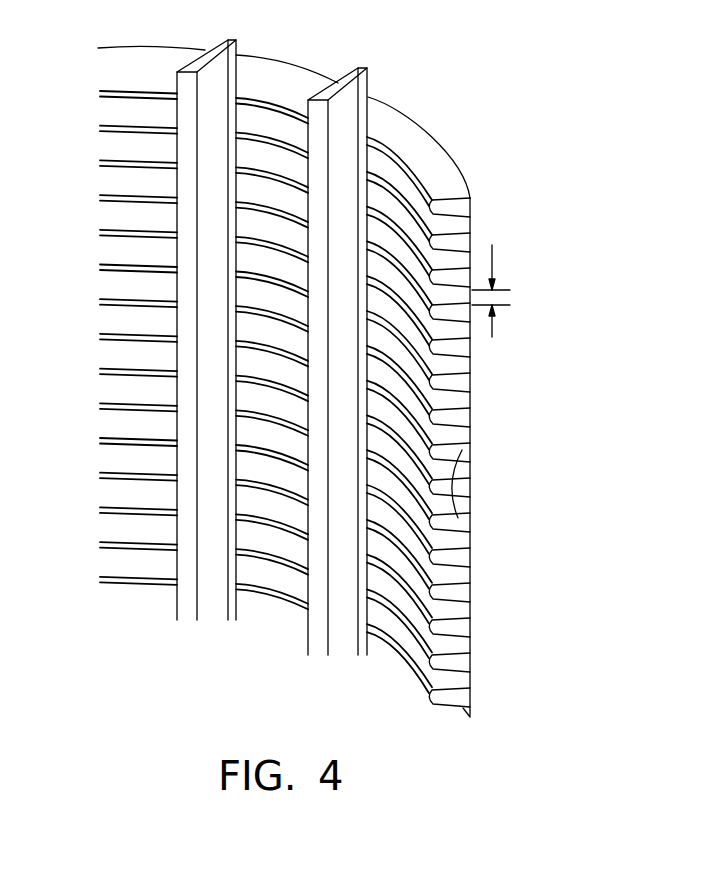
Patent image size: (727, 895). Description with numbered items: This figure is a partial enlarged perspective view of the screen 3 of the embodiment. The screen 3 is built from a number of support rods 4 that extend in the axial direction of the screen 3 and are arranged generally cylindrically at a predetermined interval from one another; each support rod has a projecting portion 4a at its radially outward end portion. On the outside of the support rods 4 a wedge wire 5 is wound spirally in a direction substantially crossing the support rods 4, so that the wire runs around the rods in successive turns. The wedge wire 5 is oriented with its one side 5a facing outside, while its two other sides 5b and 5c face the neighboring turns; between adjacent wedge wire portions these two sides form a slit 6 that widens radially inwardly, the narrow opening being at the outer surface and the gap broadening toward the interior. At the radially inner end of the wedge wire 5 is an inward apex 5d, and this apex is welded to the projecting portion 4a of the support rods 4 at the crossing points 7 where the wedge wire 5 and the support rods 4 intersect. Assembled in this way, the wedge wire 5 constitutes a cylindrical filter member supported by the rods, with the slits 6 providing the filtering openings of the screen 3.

The screen 3 is at (504, 97).
The support rods 4 is at (212, 575).
The projecting portion 4a is at (234, 38).
The wedge wire 5 is at (457, 417).
The one side 5a is at (470, 485).
The side 5b is at (458, 518).
The side 5c is at (462, 450).
The inward apex 5d is at (411, 480).
The slit 6 is at (490, 298).
The crossing points 7 is at (377, 140).